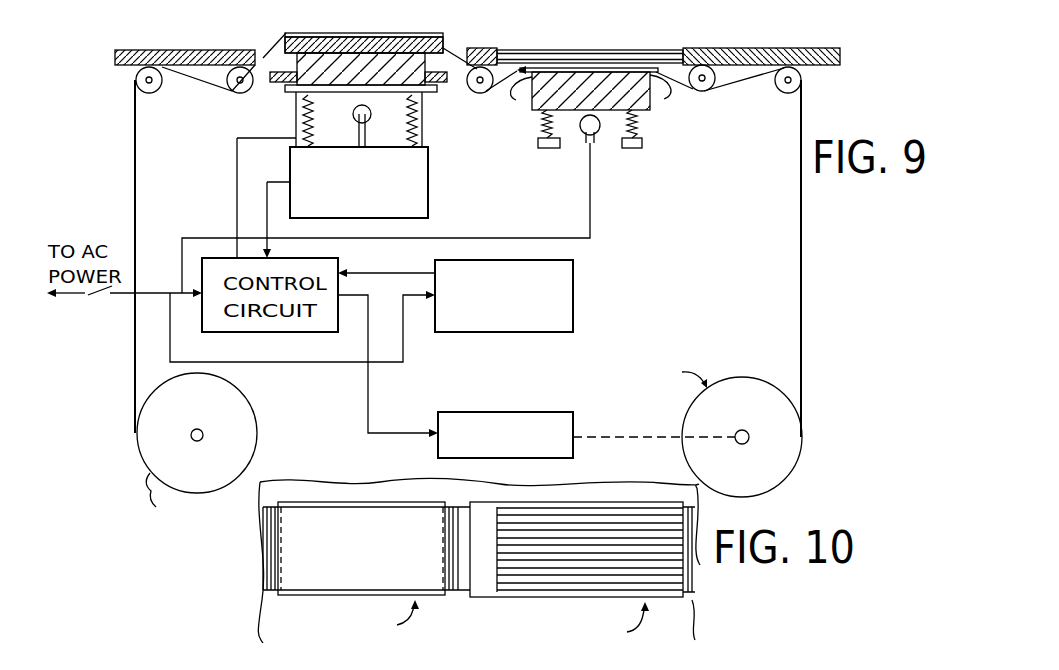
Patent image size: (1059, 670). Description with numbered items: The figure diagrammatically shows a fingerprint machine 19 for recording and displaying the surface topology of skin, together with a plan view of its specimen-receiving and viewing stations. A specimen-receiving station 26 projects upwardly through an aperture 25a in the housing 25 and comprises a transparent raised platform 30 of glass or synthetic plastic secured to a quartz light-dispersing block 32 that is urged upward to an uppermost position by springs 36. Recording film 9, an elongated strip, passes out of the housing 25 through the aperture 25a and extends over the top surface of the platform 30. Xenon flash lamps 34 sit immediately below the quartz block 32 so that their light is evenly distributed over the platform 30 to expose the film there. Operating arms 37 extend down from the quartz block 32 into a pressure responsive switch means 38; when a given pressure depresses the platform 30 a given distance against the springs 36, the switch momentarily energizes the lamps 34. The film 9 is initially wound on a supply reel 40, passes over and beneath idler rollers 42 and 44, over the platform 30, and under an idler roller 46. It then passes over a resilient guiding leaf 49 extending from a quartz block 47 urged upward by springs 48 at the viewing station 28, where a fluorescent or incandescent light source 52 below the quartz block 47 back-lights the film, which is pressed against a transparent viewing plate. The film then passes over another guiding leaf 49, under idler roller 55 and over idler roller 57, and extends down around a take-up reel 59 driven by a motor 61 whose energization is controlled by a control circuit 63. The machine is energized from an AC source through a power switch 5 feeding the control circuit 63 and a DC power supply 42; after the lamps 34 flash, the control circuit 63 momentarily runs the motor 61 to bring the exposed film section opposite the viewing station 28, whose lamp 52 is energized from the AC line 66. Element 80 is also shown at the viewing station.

In FIG. 9, the power switch 5 is at (100, 293).
In FIG. 9, the recording film 9 is at (126, 164).
In FIG. 10, the recording film 9 is at (394, 523).
In FIG. 9, the machine 19 is at (126, 110).
In FIG. 9, the housing 25 is at (172, 50).
In FIG. 9, the aperture 25a is at (262, 57).
In FIG. 10, the aperture 25a is at (273, 500).
In FIG. 9, the specimen-receiving station 26 is at (384, 28).
In FIG. 10, the specimen-receiving station 26 is at (353, 494).
In FIG. 9, the viewing station 28 is at (581, 46).
In FIG. 10, the viewing station 28 is at (650, 495).
In FIG. 9, the transparent raised platform 30 is at (440, 33).
In FIG. 9, the quartz light-dispersing block 32 is at (426, 93).
In FIG. 9, the Xenon flash lamps 34 is at (372, 106).
In FIG. 9, the springs 36 is at (303, 128).
In FIG. 9, the operating arms 37 is at (296, 113).
In FIG. 9, the pressure responsive switch means 38 is at (428, 203).
In FIG. 9, the supply reel 40 is at (252, 407).
In FIG. 9, the idler roller / DC power supply 42 is at (152, 93).
In FIG. 9, the idler roller 44 is at (238, 93).
In FIG. 9, the idler roller 46 is at (471, 93).
In FIG. 9, the quartz block 47 is at (583, 100).
In FIG. 9, the springs 48 is at (538, 128).
In FIG. 9, the resilient guiding leaf 49 is at (516, 100).
In FIG. 9, the light source 52 is at (601, 133).
In FIG. 9, the idler roller 55 is at (708, 88).
In FIG. 9, the idler roller 57 is at (802, 80).
In FIG. 9, the take-up reel 59 is at (741, 377).
In FIG. 9, the motor 61 is at (516, 411).
In FIG. 9, the control circuit 63 is at (342, 264).
In FIG. 9, the AC line 66 is at (86, 295).
In FIG. 9, the glass plate 80 is at (553, 50).